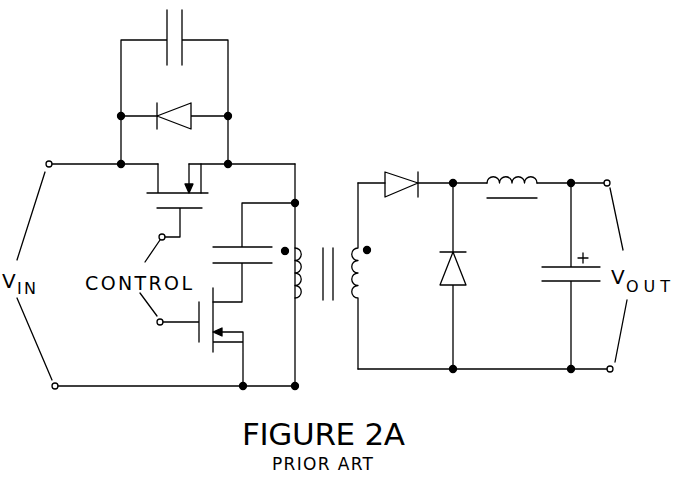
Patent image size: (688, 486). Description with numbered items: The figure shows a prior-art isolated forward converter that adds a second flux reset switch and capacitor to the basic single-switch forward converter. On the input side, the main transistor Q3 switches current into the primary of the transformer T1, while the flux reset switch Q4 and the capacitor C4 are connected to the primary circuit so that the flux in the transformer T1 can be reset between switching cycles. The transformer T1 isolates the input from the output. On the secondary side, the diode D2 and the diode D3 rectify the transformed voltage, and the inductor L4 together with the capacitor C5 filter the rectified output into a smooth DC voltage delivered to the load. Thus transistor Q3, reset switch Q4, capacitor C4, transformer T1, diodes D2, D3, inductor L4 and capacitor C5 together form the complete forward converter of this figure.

The transistor Q3 is at (161, 202).
The second flux reset switch Q4 is at (215, 337).
The capacitor C4 is at (254, 252).
The transformer T1 is at (320, 240).
The diode D2 is at (401, 198).
The diode D3 is at (437, 276).
The inductor L4 is at (512, 200).
The capacitor C5 is at (554, 276).